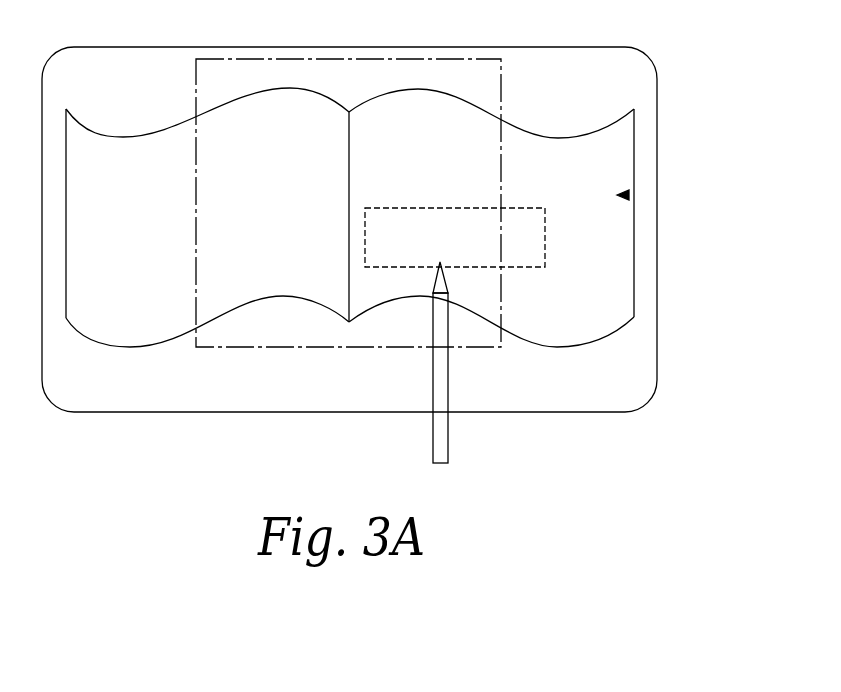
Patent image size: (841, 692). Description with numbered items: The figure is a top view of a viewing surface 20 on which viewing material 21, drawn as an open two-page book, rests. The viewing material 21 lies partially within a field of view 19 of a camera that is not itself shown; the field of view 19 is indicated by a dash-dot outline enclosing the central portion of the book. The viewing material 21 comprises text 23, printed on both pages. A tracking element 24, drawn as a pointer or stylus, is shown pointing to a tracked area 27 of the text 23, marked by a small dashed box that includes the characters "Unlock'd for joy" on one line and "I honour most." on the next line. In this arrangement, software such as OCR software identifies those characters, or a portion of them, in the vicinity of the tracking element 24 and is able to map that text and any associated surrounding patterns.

The field of view 19 is at (501, 100).
The viewing surface 20 is at (657, 130).
The viewing material 21 is at (265, 296).
The text 23 is at (628, 195).
The tracking element 24 is at (443, 445).
The tracked area 27 is at (532, 268).